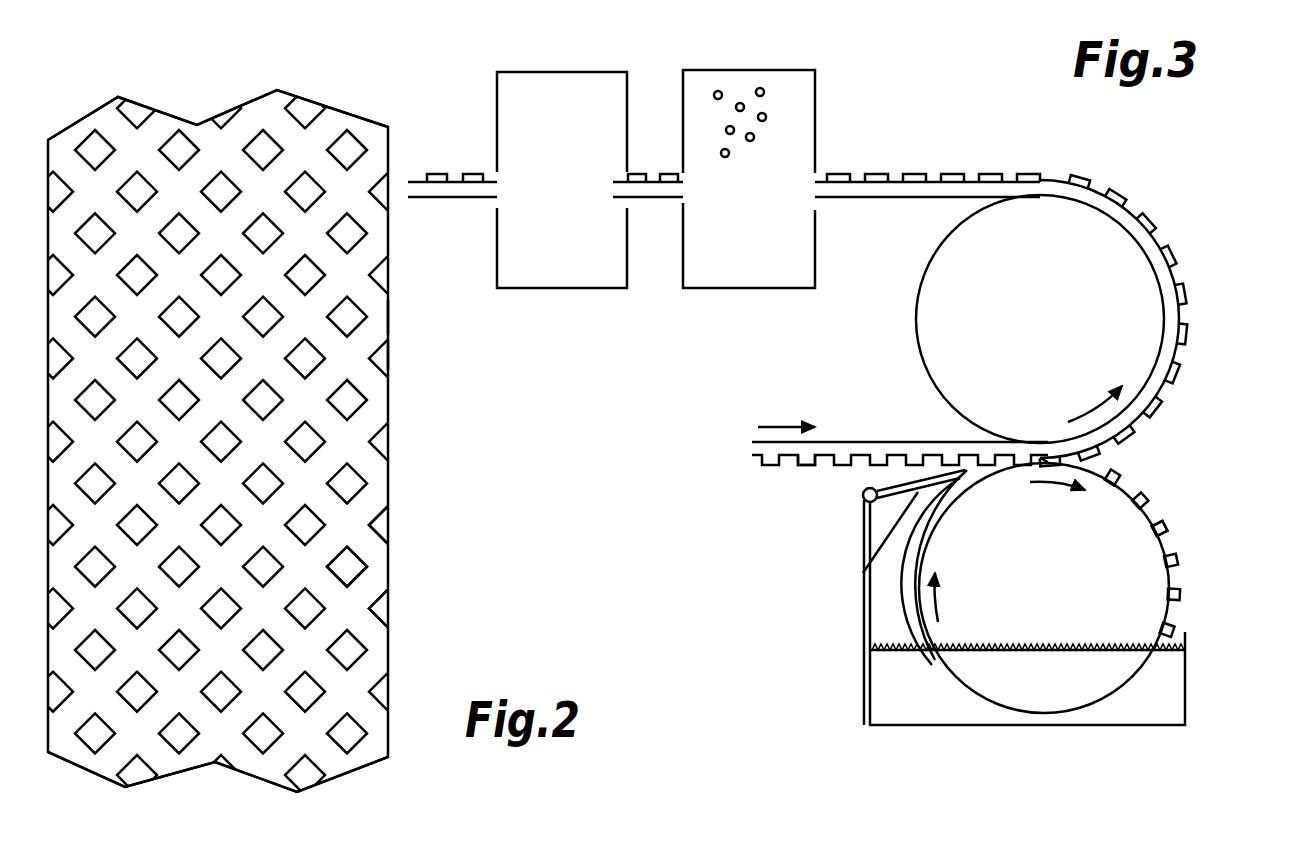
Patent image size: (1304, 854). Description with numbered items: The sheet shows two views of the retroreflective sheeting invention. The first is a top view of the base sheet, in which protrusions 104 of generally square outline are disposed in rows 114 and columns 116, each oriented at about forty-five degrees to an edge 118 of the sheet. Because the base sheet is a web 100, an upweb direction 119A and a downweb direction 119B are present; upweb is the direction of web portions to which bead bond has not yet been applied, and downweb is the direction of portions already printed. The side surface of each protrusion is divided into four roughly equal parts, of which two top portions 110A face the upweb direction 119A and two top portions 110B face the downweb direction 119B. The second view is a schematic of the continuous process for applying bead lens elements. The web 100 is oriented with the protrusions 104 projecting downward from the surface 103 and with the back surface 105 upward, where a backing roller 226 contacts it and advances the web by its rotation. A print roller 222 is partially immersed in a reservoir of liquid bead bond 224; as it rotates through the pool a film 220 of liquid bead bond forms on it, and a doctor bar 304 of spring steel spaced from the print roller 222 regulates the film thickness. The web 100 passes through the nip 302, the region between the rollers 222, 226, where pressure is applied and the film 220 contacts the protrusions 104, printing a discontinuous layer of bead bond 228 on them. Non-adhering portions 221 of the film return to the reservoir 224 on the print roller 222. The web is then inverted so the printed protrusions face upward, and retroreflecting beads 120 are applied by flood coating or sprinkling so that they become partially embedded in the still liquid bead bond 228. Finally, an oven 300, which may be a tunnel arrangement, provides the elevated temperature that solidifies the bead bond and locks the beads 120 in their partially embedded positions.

In FIG. 3, the web 100 is at (836, 461).
In FIG. 3, the surface 103 is at (758, 458).
In FIG. 2, the protrusions 104 is at (347, 483).
In FIG. 3, the protrusions 104 is at (803, 466).
In FIG. 3, the back surface 105 is at (858, 440).
In FIG. 2, the top portions facing upweb direction 110A is at (333, 552).
In FIG. 2, the top portions facing downweb direction 110B is at (352, 573).
In FIG. 2, the rows 114 is at (393, 256).
In FIG. 2, the columns 116 is at (393, 351).
In FIG. 2, the edge 118 is at (390, 318).
In FIG. 2, the upweb direction 119A is at (217, 122).
In FIG. 2, the downweb direction 119B is at (185, 770).
In FIG. 3, the retroreflecting beads 120 is at (650, 168).
In FIG. 3, the film of liquid bead bond 220 is at (984, 470).
In FIG. 3, the non-adhering portions 221 is at (1178, 557).
In FIG. 3, the print roller 222 is at (1147, 508).
In FIG. 3, the reservoir of liquid bead bond 224 is at (1167, 672).
In FIG. 3, the backing roller 226 is at (914, 345).
In FIG. 3, the discontinuous layer of bead bond 228 is at (1038, 170).
In FIG. 3, the oven 300 is at (607, 87).
In FIG. 3, the nip 302 is at (1097, 462).
In FIG. 3, the doctor bar 304 is at (866, 566).